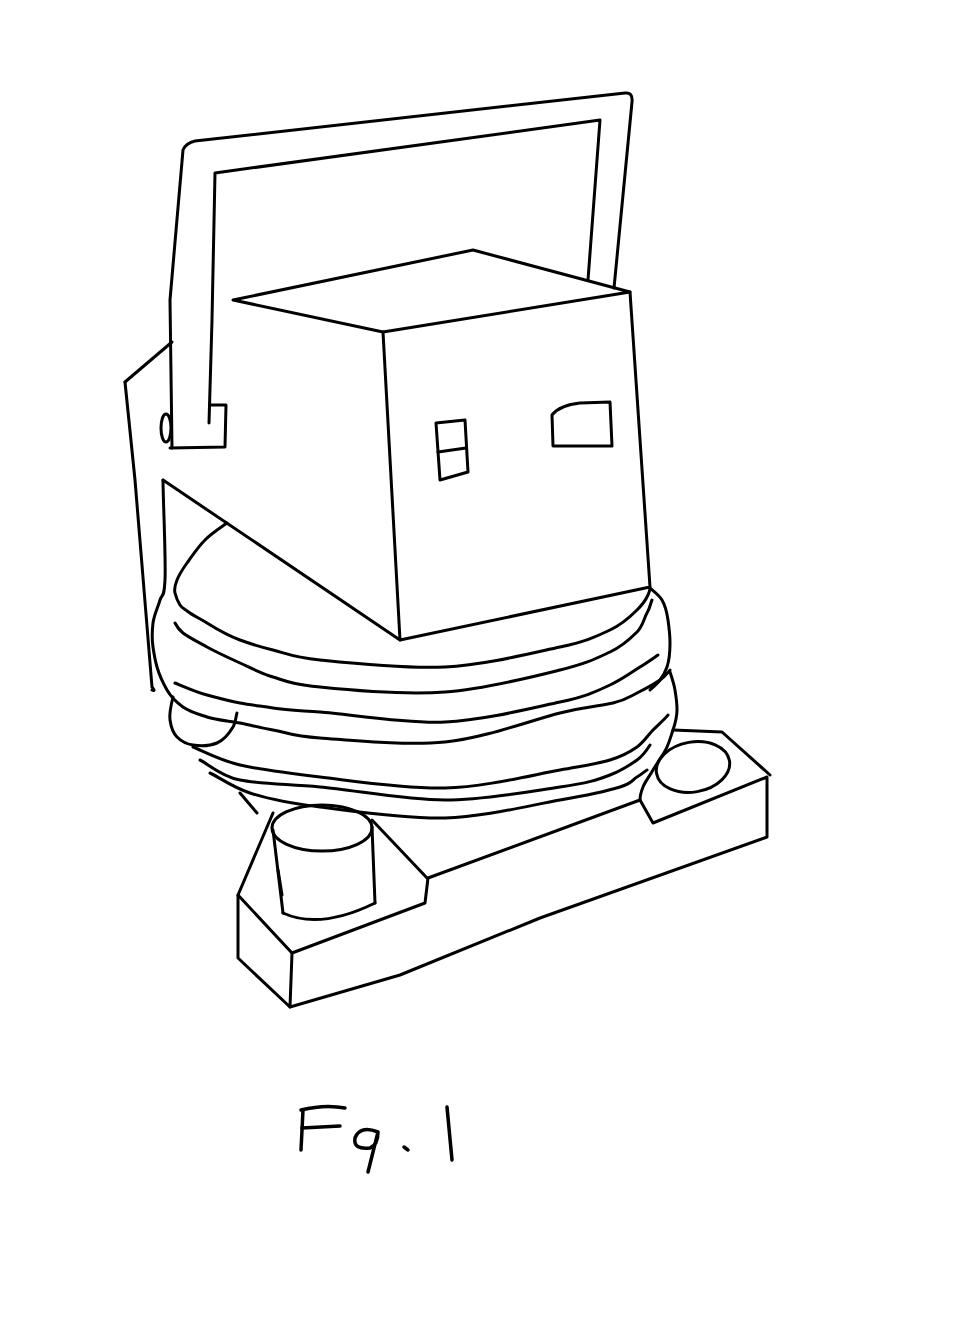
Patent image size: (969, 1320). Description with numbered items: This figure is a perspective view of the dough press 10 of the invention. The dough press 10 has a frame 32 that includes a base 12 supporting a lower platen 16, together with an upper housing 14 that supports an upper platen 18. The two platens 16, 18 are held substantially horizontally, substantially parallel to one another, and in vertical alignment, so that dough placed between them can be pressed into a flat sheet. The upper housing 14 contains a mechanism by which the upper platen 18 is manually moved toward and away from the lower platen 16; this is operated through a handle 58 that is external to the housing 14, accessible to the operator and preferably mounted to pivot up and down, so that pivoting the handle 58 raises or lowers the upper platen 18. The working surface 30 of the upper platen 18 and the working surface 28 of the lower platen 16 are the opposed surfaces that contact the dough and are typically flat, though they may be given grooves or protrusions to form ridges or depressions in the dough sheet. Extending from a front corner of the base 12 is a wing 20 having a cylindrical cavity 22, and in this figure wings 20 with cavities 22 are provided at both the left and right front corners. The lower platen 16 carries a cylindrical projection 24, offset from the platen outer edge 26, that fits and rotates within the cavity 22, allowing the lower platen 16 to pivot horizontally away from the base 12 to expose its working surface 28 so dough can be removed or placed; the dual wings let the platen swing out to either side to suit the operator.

The dough press 10 is at (746, 252).
The base 12 is at (640, 882).
The upper housing 14 is at (650, 477).
The lower platen 16 is at (675, 703).
The upper platen 18 is at (670, 614).
The wing 20 is at (743, 843).
The cylindrical cavity 22 is at (720, 767).
The cylindrical projection 24 is at (292, 877).
The platen outer edge 26 is at (330, 800).
The working surface of the lower platen 28 is at (632, 717).
The working surface of the upper platen 30 is at (202, 750).
The frame 32 is at (140, 555).
The handle 58 is at (523, 97).